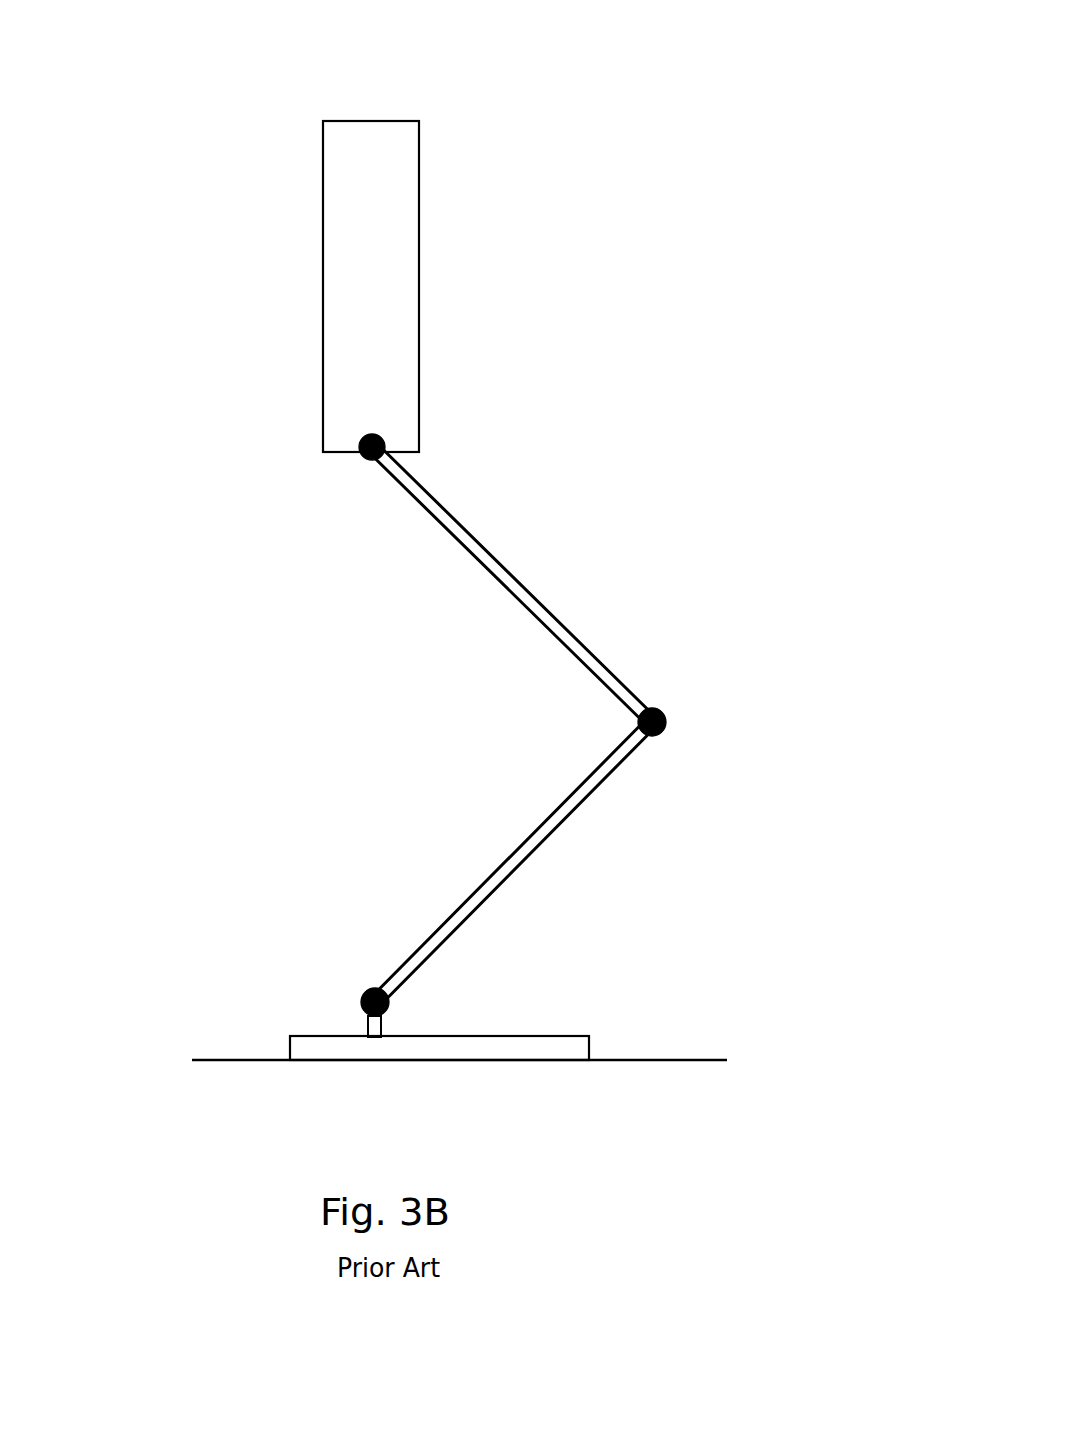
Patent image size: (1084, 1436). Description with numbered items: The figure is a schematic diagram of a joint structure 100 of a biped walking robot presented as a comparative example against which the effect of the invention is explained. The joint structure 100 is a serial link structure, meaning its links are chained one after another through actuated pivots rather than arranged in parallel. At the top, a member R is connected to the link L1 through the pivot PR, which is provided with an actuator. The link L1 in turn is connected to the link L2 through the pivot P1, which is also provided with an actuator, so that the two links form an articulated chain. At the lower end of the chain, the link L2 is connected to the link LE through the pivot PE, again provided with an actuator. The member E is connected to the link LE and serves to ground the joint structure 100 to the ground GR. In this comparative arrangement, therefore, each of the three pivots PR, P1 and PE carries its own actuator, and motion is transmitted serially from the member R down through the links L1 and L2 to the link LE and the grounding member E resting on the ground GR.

The joint structure 100 is at (220, 158).
The member R is at (400, 205).
The pivot PR is at (360, 460).
The link L1 is at (498, 568).
The pivot P1 is at (665, 718).
The link L2 is at (485, 892).
The pivot PE is at (362, 1000).
The link LE is at (365, 1027).
The member E is at (553, 1043).
The ground GR is at (698, 1058).